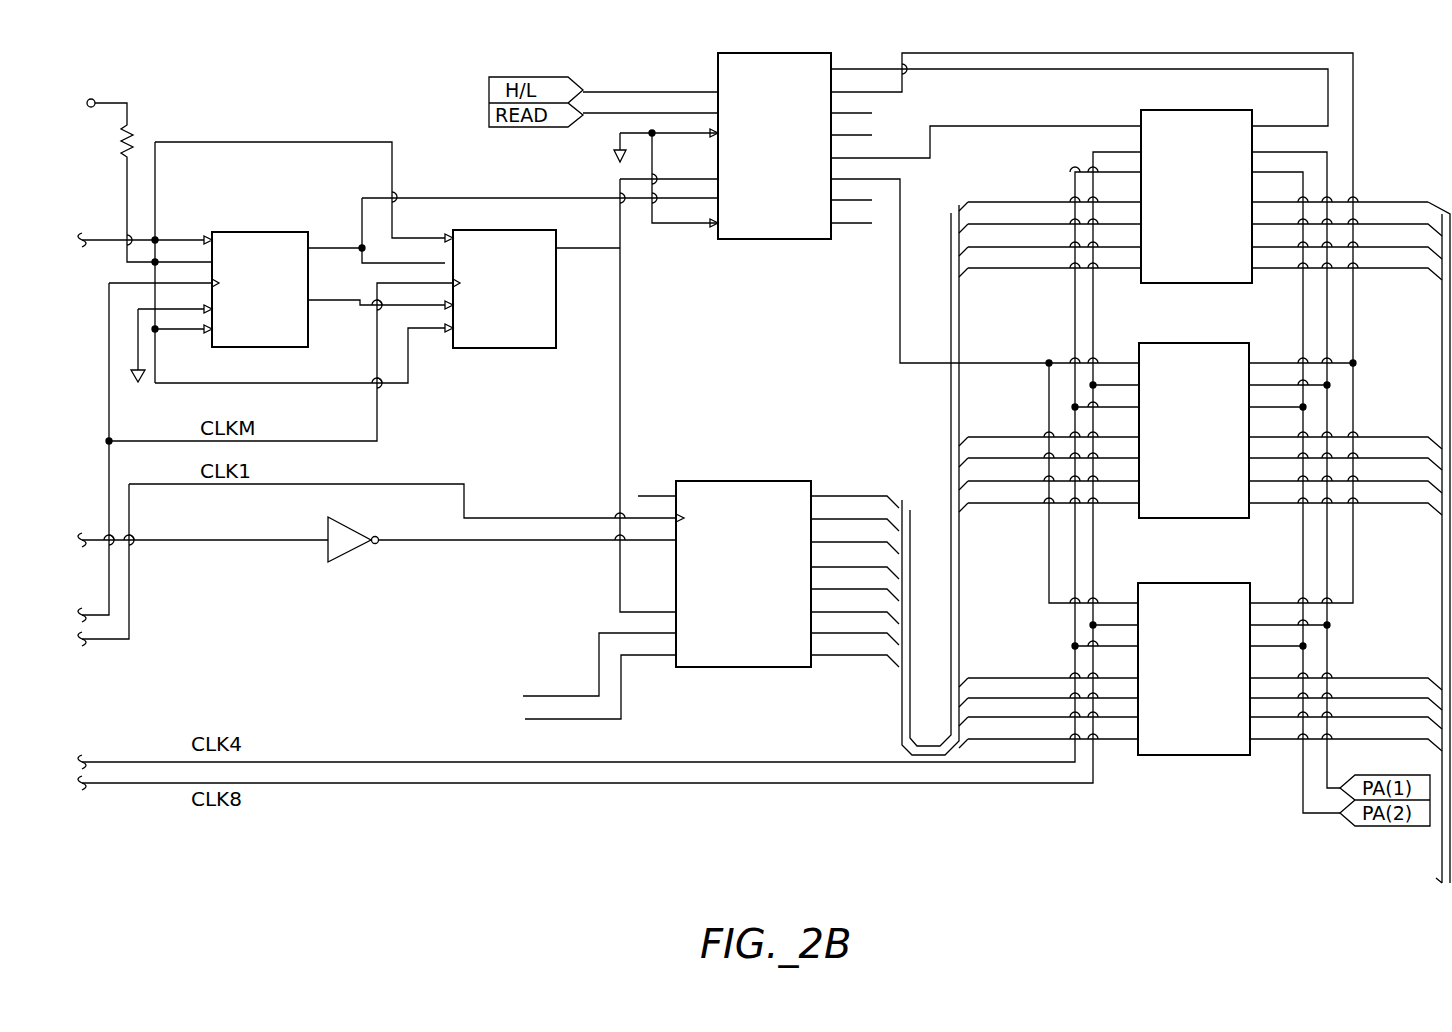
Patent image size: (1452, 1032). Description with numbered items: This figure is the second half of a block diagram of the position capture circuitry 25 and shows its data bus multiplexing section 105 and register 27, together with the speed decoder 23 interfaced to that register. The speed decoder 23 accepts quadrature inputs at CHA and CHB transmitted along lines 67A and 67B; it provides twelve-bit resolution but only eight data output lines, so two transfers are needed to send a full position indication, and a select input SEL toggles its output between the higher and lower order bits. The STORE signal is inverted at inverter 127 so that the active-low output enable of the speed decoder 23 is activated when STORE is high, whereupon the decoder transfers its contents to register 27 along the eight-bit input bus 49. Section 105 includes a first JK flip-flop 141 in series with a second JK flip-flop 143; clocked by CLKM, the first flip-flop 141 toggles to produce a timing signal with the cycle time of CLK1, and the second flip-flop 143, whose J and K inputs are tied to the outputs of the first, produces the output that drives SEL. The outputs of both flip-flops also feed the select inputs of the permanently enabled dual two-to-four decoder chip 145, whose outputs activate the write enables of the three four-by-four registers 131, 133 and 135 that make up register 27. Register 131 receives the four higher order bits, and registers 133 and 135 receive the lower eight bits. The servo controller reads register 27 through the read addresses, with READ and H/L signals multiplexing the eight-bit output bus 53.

The data bus multiplexing section 105 is at (372, 74).
The first JK flip-flop 141 is at (268, 230).
The second JK flip-flop 143 is at (492, 228).
The dual 2:4 decoder chip 145 is at (775, 240).
The speed decoder 23 is at (737, 480).
The inverter 127 is at (345, 555).
The 4x4 register 131 is at (1195, 285).
The 4x4 register 133 is at (1190, 520).
The 4x4 register 135 is at (1187, 757).
The input bus 49 is at (948, 425).
The output bus 53 is at (1442, 322).
The position capture circuitry 25 is at (1375, 135).
The register 27 is at (1232, 808).
The line 67A is at (580, 692).
The line 67B is at (582, 723).